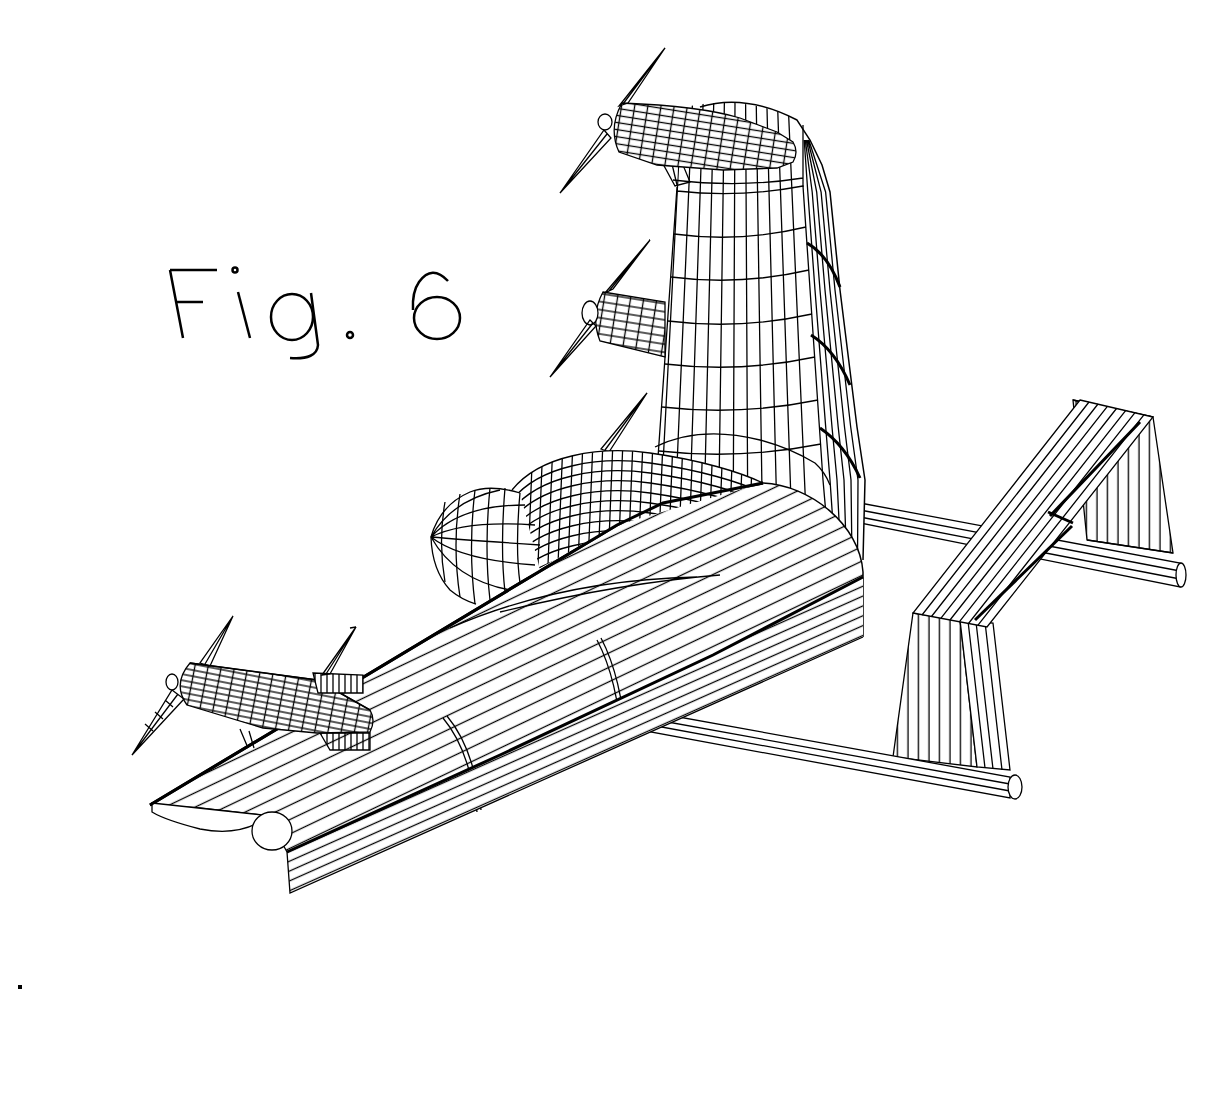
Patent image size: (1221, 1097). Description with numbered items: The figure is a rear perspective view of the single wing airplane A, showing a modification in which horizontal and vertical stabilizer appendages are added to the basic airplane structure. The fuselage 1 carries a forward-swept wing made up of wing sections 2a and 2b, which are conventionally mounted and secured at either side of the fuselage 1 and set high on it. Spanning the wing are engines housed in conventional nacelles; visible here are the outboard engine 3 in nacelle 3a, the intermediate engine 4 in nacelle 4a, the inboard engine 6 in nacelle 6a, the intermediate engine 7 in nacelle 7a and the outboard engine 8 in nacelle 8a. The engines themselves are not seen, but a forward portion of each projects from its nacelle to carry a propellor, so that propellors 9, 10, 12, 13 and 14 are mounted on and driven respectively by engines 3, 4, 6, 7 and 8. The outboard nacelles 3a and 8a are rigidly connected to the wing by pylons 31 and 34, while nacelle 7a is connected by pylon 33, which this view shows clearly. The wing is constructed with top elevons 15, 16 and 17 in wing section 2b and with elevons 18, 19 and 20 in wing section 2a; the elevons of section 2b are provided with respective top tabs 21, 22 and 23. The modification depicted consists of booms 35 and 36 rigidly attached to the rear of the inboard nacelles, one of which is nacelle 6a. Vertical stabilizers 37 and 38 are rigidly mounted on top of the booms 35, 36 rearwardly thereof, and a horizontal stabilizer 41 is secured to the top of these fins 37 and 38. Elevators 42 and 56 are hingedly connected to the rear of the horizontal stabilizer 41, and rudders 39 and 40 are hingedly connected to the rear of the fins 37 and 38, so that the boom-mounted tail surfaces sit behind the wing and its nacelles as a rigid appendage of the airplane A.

The fuselage 1 is at (453, 503).
The wing section 2a is at (756, 313).
The wing section 2b is at (457, 623).
The outboard engine 3 is at (252, 659).
The nacelle 3a is at (230, 668).
The intermediate engine 4 is at (357, 618).
The nacelle 4a is at (343, 670).
The inboard engine 6 is at (600, 447).
The nacelle 6a is at (663, 420).
The intermediate engine 7 is at (572, 315).
The nacelle 7a is at (618, 420).
The outboard engine 8 is at (652, 120).
The nacelle 8a is at (653, 98).
The propellor 9 is at (228, 622).
The propellor 10 is at (350, 630).
The propellor 12 is at (613, 427).
The propellor 13 is at (595, 350).
The propellor 14 is at (577, 170).
The top elevon 15 is at (270, 837).
The top elevon 16 is at (522, 692).
The top elevon 17 is at (690, 615).
The elevon 18 is at (857, 427).
The elevon 19 is at (813, 338).
The elevon 20 is at (810, 232).
The top tab 21 is at (307, 870).
The top tab 22 is at (539, 739).
The top tab 23 is at (793, 650).
The pylon 31 is at (237, 743).
The pylon 33 is at (632, 261).
The pylon 34 is at (670, 173).
The boom 35 is at (853, 760).
The boom 36 is at (1090, 560).
The vertical stabilizer 37 is at (965, 695).
The vertical stabilizer 38 is at (1093, 527).
The rudder 39 is at (990, 707).
The rudder 40 is at (1129, 482).
The horizontal stabilizer 41 is at (1033, 531).
The elevator 42 is at (1007, 592).
The elevator 56 is at (1142, 410).
The single wing airplane A is at (765, 104).